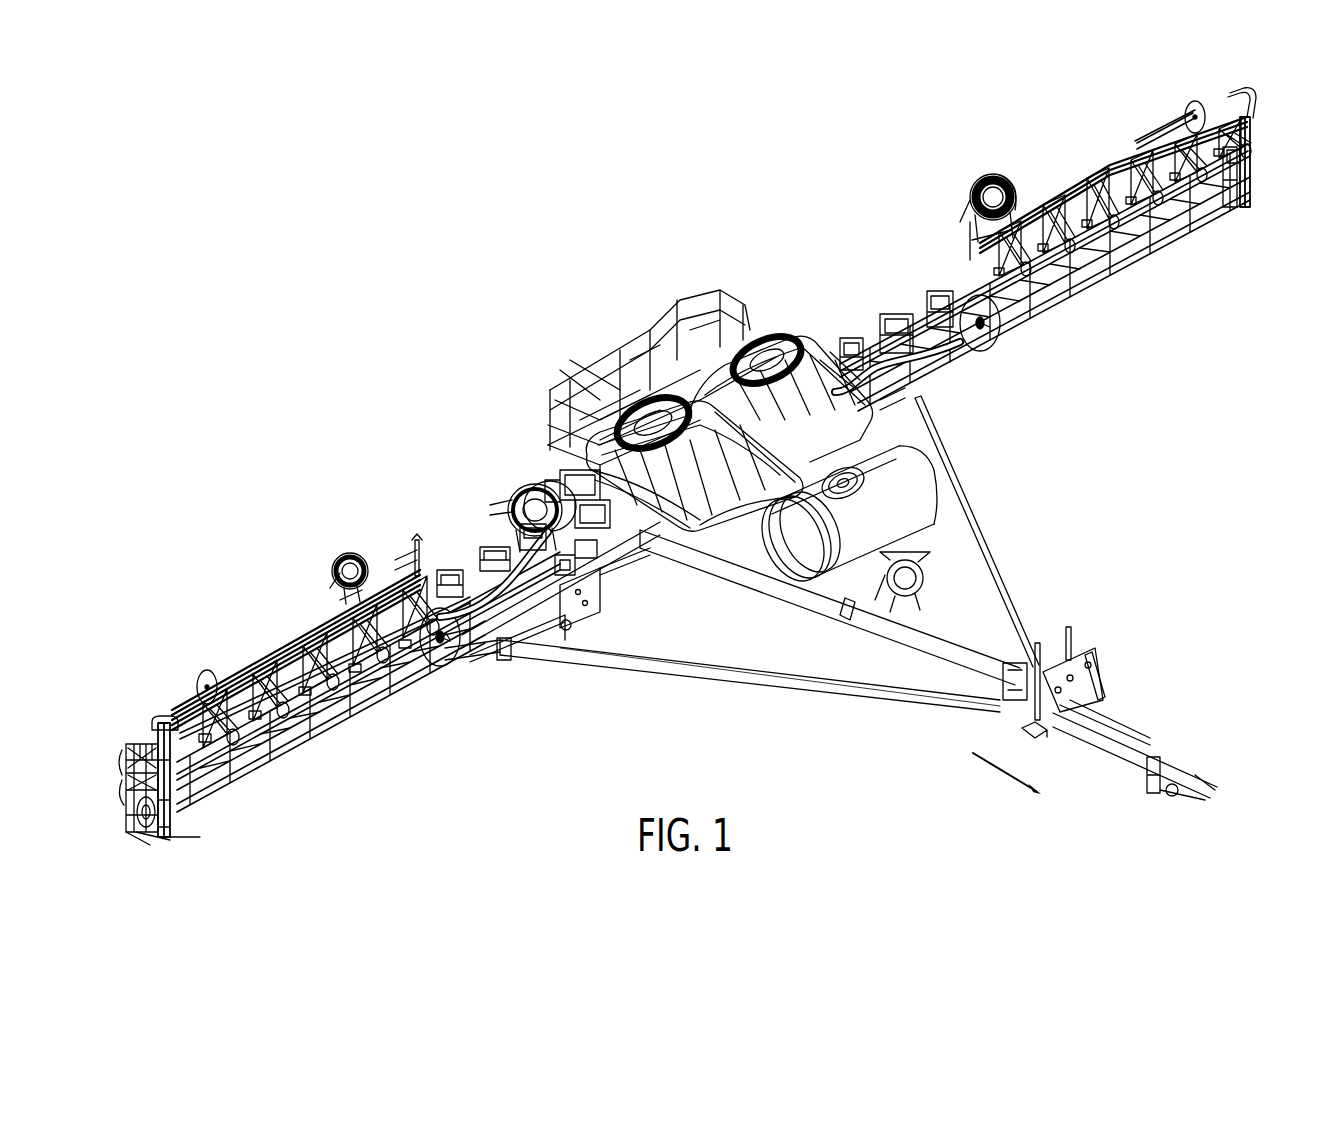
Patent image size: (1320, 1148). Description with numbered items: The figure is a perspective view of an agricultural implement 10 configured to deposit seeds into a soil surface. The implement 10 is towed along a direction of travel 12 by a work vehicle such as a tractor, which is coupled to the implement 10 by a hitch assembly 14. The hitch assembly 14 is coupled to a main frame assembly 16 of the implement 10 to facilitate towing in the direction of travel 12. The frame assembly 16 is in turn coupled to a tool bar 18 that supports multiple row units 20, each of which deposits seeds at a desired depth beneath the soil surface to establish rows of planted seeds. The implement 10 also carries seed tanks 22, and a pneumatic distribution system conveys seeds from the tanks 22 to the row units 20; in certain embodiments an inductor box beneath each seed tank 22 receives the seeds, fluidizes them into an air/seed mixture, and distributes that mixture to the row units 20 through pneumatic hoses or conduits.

The agricultural implement 10 is at (462, 420).
The direction of travel 12 is at (1000, 775).
The hitch assembly 14 is at (1177, 770).
The main frame assembly 16 is at (947, 633).
The tool bar 18 is at (262, 767).
The row units 20 is at (487, 553).
The seed tanks 22 is at (843, 412).